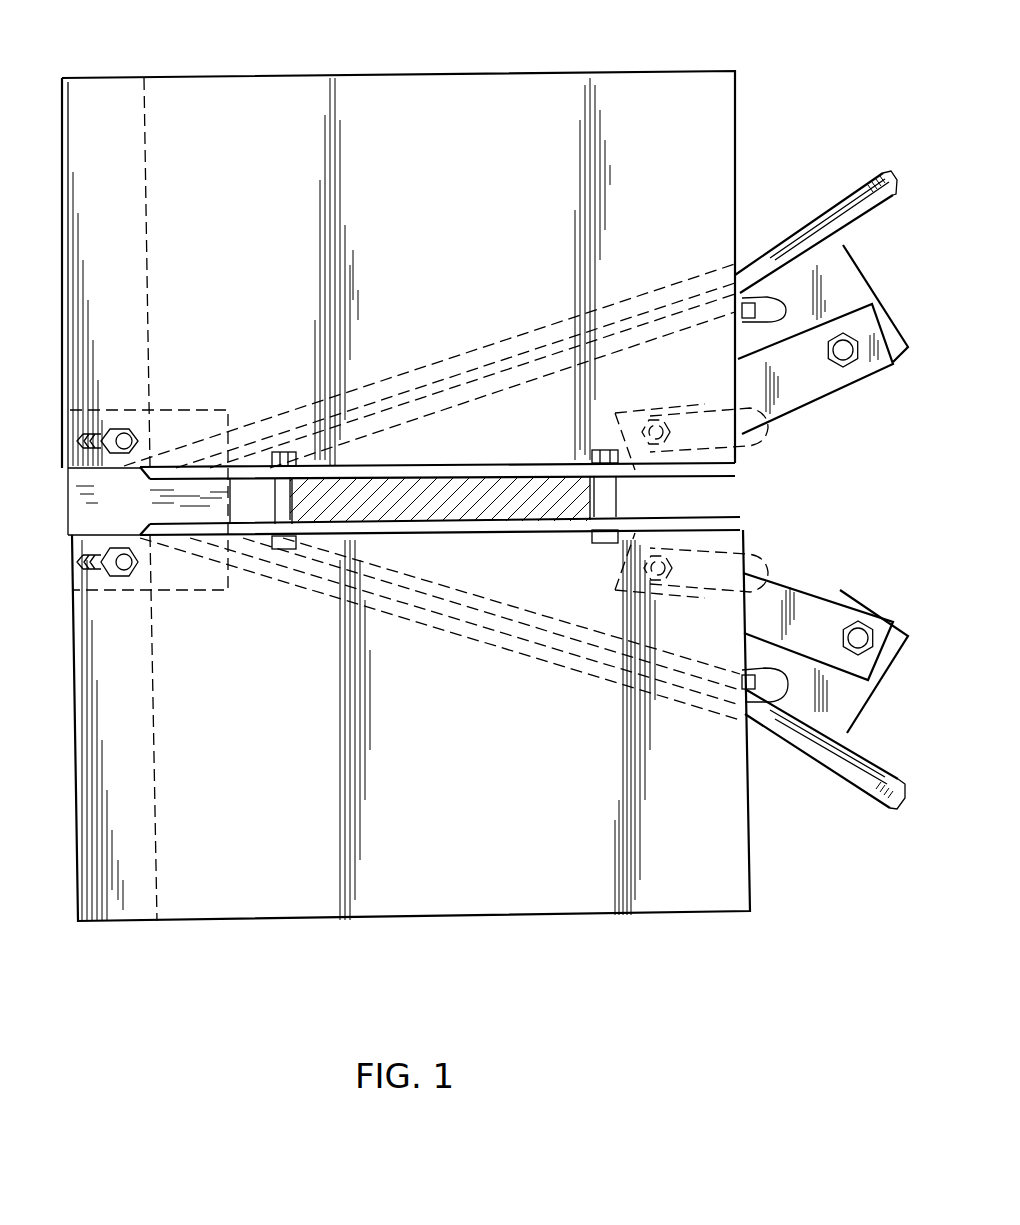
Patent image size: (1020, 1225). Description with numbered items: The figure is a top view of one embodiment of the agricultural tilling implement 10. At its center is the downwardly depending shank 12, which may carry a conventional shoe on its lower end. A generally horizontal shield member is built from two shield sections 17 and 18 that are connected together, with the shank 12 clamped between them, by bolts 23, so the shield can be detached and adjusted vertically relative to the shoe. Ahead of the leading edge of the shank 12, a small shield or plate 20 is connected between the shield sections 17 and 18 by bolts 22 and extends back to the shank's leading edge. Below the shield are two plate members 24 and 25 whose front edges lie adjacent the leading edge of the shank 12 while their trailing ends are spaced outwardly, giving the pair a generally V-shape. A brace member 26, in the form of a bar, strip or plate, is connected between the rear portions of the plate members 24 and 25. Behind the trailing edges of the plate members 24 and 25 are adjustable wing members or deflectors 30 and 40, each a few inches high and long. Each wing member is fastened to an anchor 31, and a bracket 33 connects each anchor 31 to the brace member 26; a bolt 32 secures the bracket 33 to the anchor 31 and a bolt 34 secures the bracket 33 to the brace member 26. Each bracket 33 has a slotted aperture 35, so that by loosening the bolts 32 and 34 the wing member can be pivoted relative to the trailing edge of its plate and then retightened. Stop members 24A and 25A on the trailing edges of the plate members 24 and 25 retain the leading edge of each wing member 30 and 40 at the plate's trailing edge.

The agricultural tilling implement 10 is at (630, 46).
The shank 12 is at (421, 486).
The shield section 17 is at (259, 88).
The shield section 18 is at (281, 905).
The shield or plate 20 is at (82, 512).
The bolts 22 is at (128, 547).
The bolts 23 is at (300, 549).
The plate member 24 is at (564, 665).
The stop member 24A is at (789, 695).
The plate member 25 is at (567, 330).
The stop member 25A is at (790, 335).
The brace member 26 is at (703, 495).
The wing member 30 is at (850, 774).
The anchor 31 is at (854, 284).
The bolt 32 is at (860, 366).
The bracket 33 is at (799, 390).
The bolt 34 is at (738, 441).
The slotted aperture 35 is at (778, 428).
The wing member 40 is at (836, 212).